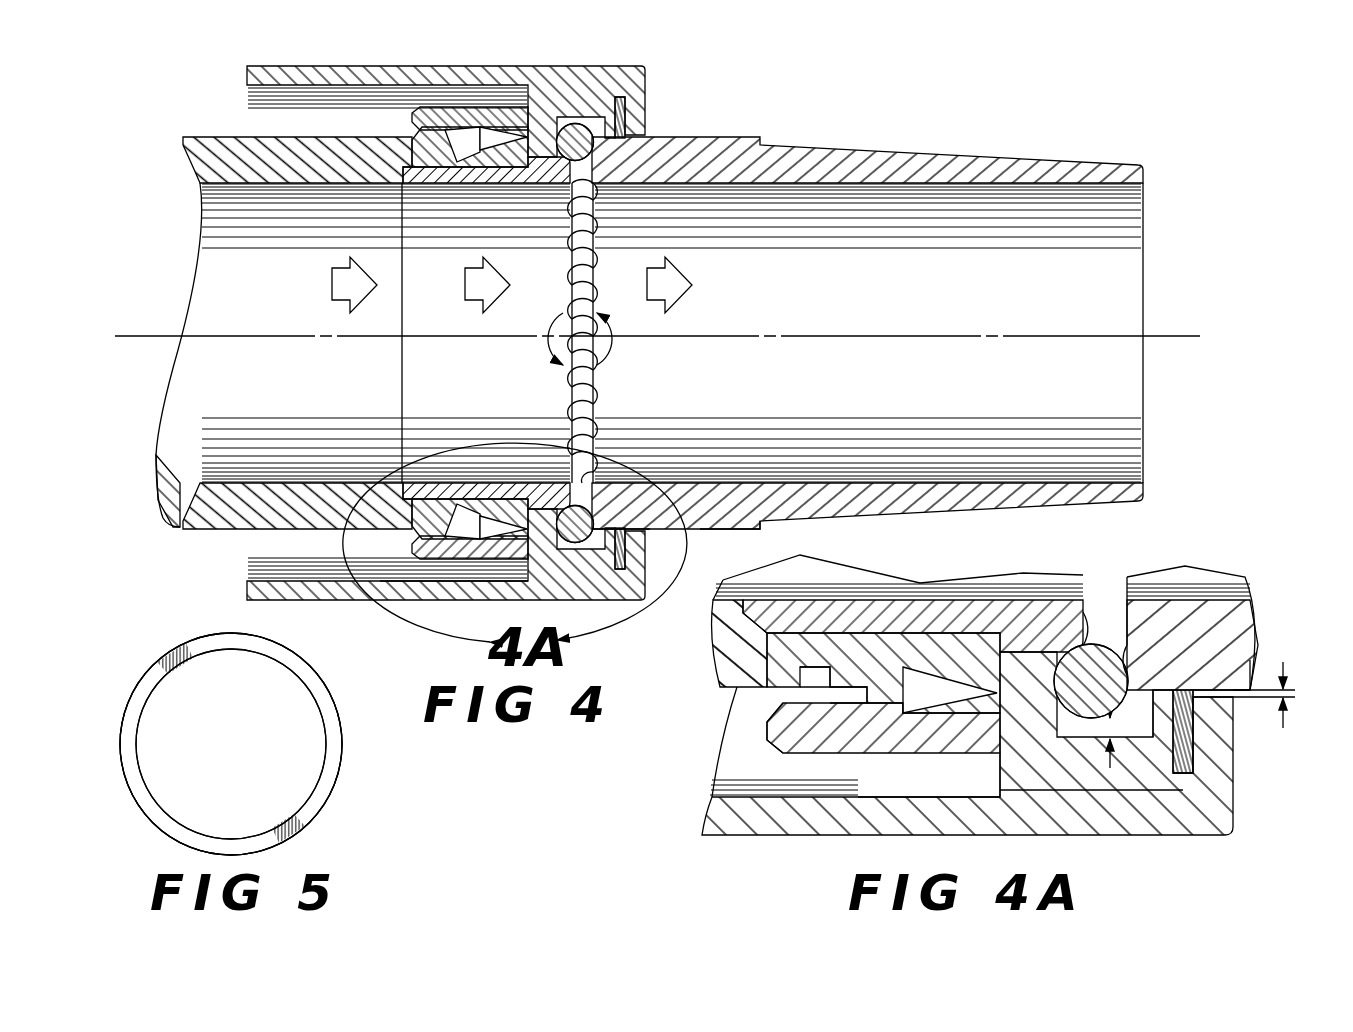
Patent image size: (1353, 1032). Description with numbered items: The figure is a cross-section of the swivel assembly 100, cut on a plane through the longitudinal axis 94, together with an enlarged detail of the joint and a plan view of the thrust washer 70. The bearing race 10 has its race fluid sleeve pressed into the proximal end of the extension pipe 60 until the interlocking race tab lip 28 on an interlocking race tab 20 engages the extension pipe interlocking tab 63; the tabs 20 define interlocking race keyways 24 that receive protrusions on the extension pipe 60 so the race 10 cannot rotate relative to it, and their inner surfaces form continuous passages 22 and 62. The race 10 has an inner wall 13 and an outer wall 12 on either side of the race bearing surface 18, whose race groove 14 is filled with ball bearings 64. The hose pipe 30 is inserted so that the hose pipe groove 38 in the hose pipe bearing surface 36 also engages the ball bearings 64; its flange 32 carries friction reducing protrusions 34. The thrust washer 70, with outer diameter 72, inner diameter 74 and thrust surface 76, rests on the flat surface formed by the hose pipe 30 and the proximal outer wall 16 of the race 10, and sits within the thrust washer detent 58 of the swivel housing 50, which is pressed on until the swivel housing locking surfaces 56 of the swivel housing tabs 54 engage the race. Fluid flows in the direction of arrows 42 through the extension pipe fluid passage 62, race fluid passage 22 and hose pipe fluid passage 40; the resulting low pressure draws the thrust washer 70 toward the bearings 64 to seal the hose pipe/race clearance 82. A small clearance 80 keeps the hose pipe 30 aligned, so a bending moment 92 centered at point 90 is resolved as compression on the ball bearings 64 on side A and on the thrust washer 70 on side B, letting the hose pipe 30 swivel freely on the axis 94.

In FIG. 4, the bearing race 10 is at (447, 100).
In FIG. 4A, the bearing race 10 is at (766, 751).
In FIG. 4A, the outer wall 12 is at (1158, 737).
In FIG. 4A, the inner wall 13 is at (1082, 598).
In FIG. 4A, the race groove 14 is at (990, 682).
In FIG. 4A, the proximal outer wall 16 is at (1202, 756).
In FIG. 4A, the race bearing surface 18 is at (1092, 646).
In FIG. 4, the interlocking race tab 20 is at (483, 116).
In FIG. 4, the race fluid passage 22 is at (478, 404).
In FIG. 4A, the interlocking race keyway 24 is at (827, 756).
In FIG. 4A, the interlocking race tab lip 28 is at (870, 710).
In FIG. 4, the hose pipe 30 is at (928, 157).
In FIG. 4A, the hose pipe 30 is at (1265, 622).
In FIG. 4, the flange 32 is at (586, 562).
In FIG. 4A, the flange 32 is at (1195, 688).
In FIG. 4, the friction reducing protrusions 34 is at (703, 531).
In FIG. 4A, the friction reducing protrusions 34 is at (1257, 690).
In FIG. 4A, the hose pipe bearing surface 36 is at (1122, 622).
In FIG. 4A, the hose pipe groove 38 is at (1128, 648).
In FIG. 4, the hose pipe fluid passage 40 is at (1112, 395).
In FIG. 4, the arrows (fluid flow direction) 42 is at (337, 282).
In FIG. 4, the swivel housing 50 is at (558, 62).
In FIG. 4A, the swivel housing 50 is at (721, 838).
In FIG. 4, the swivel housing tab 54 is at (461, 578).
In FIG. 4A, the swivel housing tab 54 is at (879, 770).
In FIG. 4A, the swivel housing locking surfaces 56 is at (1012, 798).
In FIG. 4A, the thrust washer detent 58 is at (1197, 702).
In FIG. 4, the extension pipe 60 is at (207, 134).
In FIG. 4A, the extension pipe 60 is at (897, 621).
In FIG. 4, the extension pipe fluid passage 62 is at (195, 407).
In FIG. 4A, the extension pipe interlocking tab 63 is at (801, 681).
In FIG. 4, the ball bearings 64 is at (580, 508).
In FIG. 4A, the ball bearings 64 is at (1091, 681).
In FIG. 4, the thrust washer 70 is at (627, 571).
In FIG. 4A, the thrust washer 70 is at (1208, 802).
In FIG. 5, the thrust washer 70 is at (160, 652).
In FIG. 5, the outer diameter 72 is at (132, 703).
In FIG. 5, the inner diameter 74 is at (148, 712).
In FIG. 4A, the thrust surface 76 is at (1198, 744).
In FIG. 5, the thrust surface 76 is at (327, 782).
In FIG. 4A, the clearance 80 is at (1285, 696).
In FIG. 4A, the hose pipe/race clearance 82 is at (1112, 733).
In FIG. 4, the point 90 is at (596, 336).
In FIG. 4, the bending moment 92 is at (573, 293).
In FIG. 4, the longitudinal axis 94 is at (1158, 337).
In FIG. 4, the swivel assembly 100 is at (815, 108).
In FIG. 4, the side A is at (600, 67).
In FIG. 4, the side B is at (645, 457).